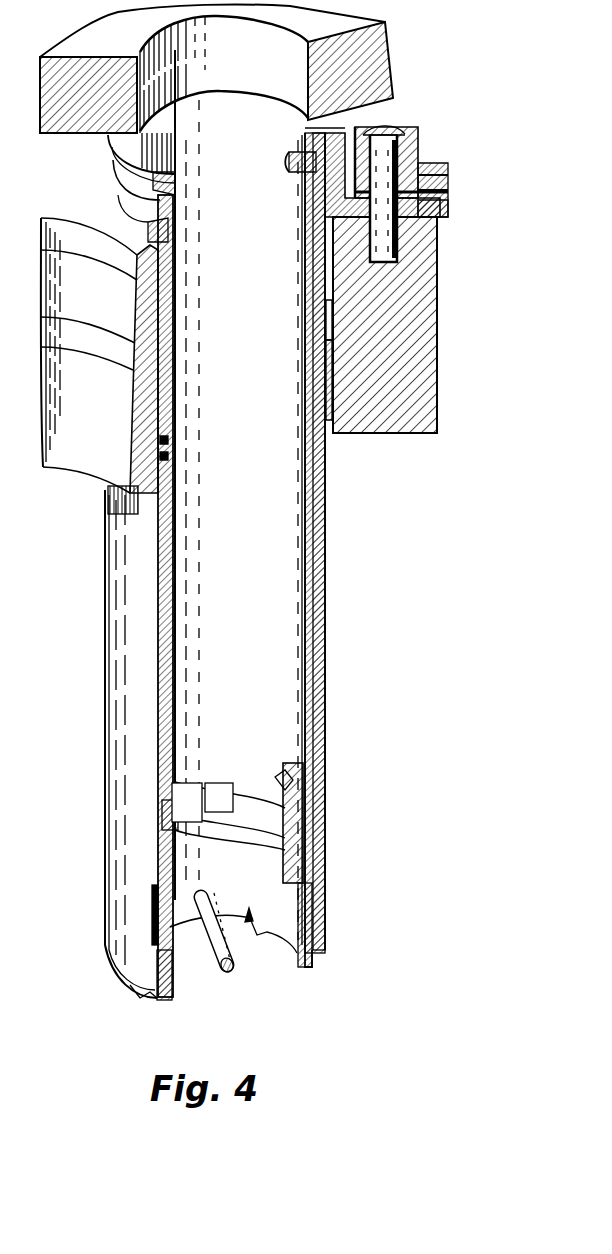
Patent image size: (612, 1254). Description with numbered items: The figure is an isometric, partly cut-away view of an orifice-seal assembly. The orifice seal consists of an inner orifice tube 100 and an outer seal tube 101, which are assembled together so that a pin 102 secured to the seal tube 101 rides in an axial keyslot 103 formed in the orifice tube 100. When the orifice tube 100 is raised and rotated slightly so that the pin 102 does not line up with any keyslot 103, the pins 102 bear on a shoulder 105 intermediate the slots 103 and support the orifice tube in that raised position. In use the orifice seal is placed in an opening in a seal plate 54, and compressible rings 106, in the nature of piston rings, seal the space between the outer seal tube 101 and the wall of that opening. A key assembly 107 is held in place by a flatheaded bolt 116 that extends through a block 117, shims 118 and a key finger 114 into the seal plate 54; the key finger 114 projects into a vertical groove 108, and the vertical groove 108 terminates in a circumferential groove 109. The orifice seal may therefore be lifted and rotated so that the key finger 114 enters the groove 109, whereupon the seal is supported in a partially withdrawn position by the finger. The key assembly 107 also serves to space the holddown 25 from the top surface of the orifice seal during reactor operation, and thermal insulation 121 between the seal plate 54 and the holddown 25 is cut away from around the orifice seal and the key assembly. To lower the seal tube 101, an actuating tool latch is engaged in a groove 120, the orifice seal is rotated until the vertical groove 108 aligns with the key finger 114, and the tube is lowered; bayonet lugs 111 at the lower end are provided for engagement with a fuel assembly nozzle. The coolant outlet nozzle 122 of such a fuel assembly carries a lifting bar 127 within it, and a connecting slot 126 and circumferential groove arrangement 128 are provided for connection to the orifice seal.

The holddown 25 is at (310, 77).
The seal plate 54 is at (410, 433).
The inner orifice tube 100 is at (323, 500).
The outer seal tube 101 is at (325, 578).
The pin 102 is at (165, 196).
The axial keyslot 103 is at (147, 193).
The shoulder 105 is at (307, 207).
The compressible rings 106 is at (163, 458).
The key assembly 107 is at (367, 255).
The vertical groove 108 is at (322, 328).
The circumferential groove 109 is at (307, 368).
The bayonet lugs 111 is at (287, 773).
The key finger 114 is at (333, 221).
The flatheaded bolt 116 is at (393, 136).
The block 117 is at (420, 157).
The shims 118 is at (443, 193).
The groove 120 is at (143, 230).
The thermal insulation 121 is at (432, 205).
The coolant outlet nozzle 122 is at (168, 987).
The connecting slot 126 is at (218, 813).
The lifting bar 127 is at (228, 967).
The circumferential groove arrangement 128 is at (320, 868).